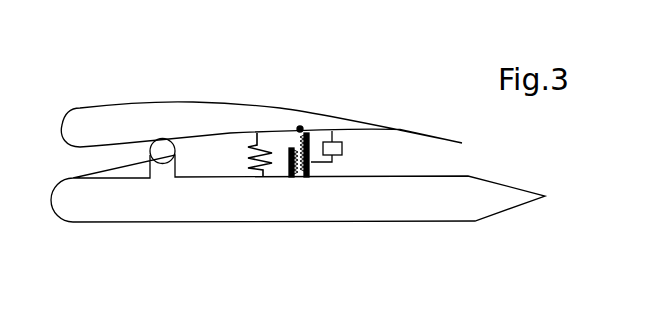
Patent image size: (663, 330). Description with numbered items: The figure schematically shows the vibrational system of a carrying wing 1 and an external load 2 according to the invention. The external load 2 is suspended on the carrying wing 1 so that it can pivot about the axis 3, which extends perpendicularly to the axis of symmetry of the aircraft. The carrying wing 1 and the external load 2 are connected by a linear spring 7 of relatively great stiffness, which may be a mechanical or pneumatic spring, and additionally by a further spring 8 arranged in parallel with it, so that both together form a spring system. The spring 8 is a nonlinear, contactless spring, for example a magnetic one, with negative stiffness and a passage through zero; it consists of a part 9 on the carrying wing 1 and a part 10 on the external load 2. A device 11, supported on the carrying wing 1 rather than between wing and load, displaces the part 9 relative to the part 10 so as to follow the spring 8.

The carrying wing 1 is at (92, 118).
The external load 2 is at (363, 203).
The axis 3 is at (163, 150).
The linear spring 7 is at (256, 133).
The spring 8 is at (300, 128).
The part 9 is at (311, 173).
The part 10 is at (290, 172).
The device 11 is at (333, 148).